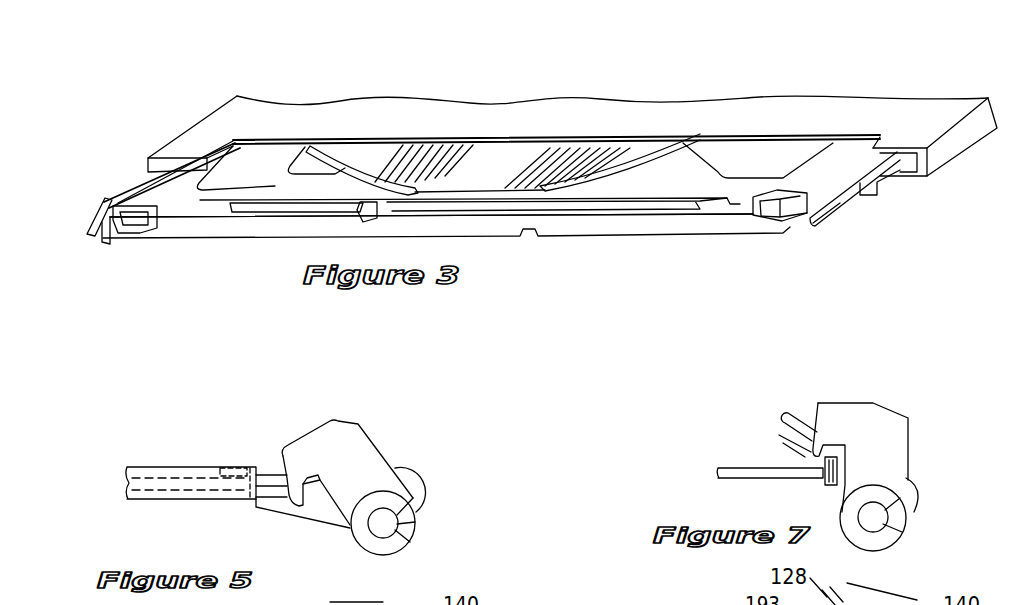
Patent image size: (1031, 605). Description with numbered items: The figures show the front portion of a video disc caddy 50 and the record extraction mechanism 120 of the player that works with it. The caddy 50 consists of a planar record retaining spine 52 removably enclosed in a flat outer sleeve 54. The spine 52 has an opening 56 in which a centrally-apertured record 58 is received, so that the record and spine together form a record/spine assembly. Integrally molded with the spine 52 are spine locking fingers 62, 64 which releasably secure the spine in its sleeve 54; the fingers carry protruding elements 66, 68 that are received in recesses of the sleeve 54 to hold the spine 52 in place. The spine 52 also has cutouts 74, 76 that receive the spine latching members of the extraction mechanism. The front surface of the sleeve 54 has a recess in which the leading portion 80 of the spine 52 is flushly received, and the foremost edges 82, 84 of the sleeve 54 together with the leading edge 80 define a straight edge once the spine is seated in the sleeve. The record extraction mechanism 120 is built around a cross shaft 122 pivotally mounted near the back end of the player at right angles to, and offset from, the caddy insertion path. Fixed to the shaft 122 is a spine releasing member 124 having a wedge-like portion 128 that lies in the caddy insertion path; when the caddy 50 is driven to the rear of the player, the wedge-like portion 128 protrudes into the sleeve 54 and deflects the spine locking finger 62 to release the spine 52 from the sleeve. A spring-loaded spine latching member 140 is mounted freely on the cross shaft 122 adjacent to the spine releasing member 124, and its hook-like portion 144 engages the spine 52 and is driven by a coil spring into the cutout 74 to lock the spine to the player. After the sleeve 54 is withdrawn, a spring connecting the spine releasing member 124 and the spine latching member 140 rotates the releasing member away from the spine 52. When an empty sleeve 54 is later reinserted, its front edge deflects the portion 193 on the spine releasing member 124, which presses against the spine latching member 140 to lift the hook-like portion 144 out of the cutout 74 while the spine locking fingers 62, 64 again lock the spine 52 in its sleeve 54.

In FIG. 3, the caddy 50 is at (907, 73).
In FIG. 3, the record retaining spine 52 is at (680, 185).
In FIG. 5, the record retaining spine 52 is at (177, 480).
In FIG. 7, the record retaining spine 52 is at (765, 473).
In FIG. 3, the outer sleeve 54 is at (727, 100).
In FIG. 5, the outer sleeve 54 is at (166, 466).
In FIG. 3, the opening 56 is at (315, 163).
In FIG. 3, the record 58 is at (617, 160).
In FIG. 3, the spine locking finger 62 is at (140, 188).
In FIG. 3, the spine locking finger 64 is at (840, 210).
In FIG. 3, the protruding element 66 is at (107, 203).
In FIG. 3, the protruding element 68 is at (880, 195).
In FIG. 3, the cutout 74 is at (157, 213).
In FIG. 5, the cutout 74 is at (240, 467).
In FIG. 3, the cutout 76 is at (740, 200).
In FIG. 3, the leading portion 80 is at (712, 223).
In FIG. 3, the foremost edge 82 is at (172, 158).
In FIG. 3, the foremost edge 84 is at (893, 148).
In FIG. 5, the record extraction mechanism 120 is at (437, 431).
In FIG. 7, the record extraction mechanism 120 is at (982, 440).
In FIG. 5, the cross shaft 122 is at (398, 523).
In FIG. 7, the cross shaft 122 is at (888, 522).
In FIG. 5, the spine releasing member 124 is at (407, 485).
In FIG. 7, the spine releasing member 124 is at (917, 488).
In FIG. 5, the wedge-like portion 128 is at (267, 473).
In FIG. 7, the wedge-like portion 128 is at (793, 417).
In FIG. 5, the spine latching member 140 is at (370, 467).
In FIG. 7, the spine latching member 140 is at (890, 418).
In FIG. 5, the hook-like portion 144 is at (303, 503).
In FIG. 7, the hook-like portion 144 is at (810, 453).
In FIG. 5, the portion 193 is at (287, 507).
In FIG. 7, the portion 193 is at (782, 437).